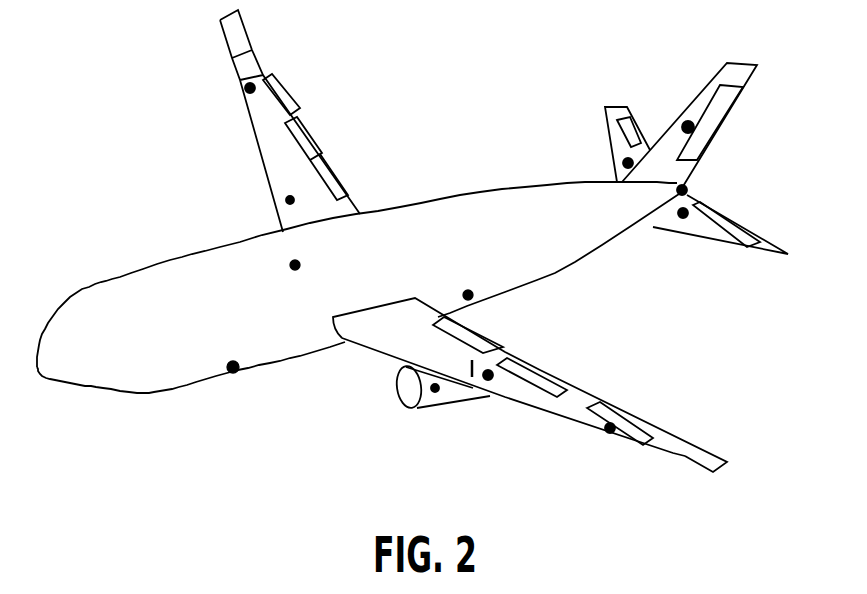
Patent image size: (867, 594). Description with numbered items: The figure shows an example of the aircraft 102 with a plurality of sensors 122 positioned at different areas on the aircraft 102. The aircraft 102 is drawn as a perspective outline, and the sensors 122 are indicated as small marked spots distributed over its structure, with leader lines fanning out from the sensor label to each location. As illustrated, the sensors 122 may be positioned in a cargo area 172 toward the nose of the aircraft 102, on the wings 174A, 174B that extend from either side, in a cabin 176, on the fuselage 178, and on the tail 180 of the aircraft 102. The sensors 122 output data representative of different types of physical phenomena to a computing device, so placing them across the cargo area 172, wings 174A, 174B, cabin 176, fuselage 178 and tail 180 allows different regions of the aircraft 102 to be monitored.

The aircraft 102 is at (105, 86).
The sensors 122 is at (682, 190).
The cargo area 172 is at (223, 352).
The wing 174A is at (268, 152).
The wing 174B is at (574, 379).
The cabin 176 is at (268, 251).
The fuselage 178 is at (448, 279).
The tail 180 is at (685, 87).